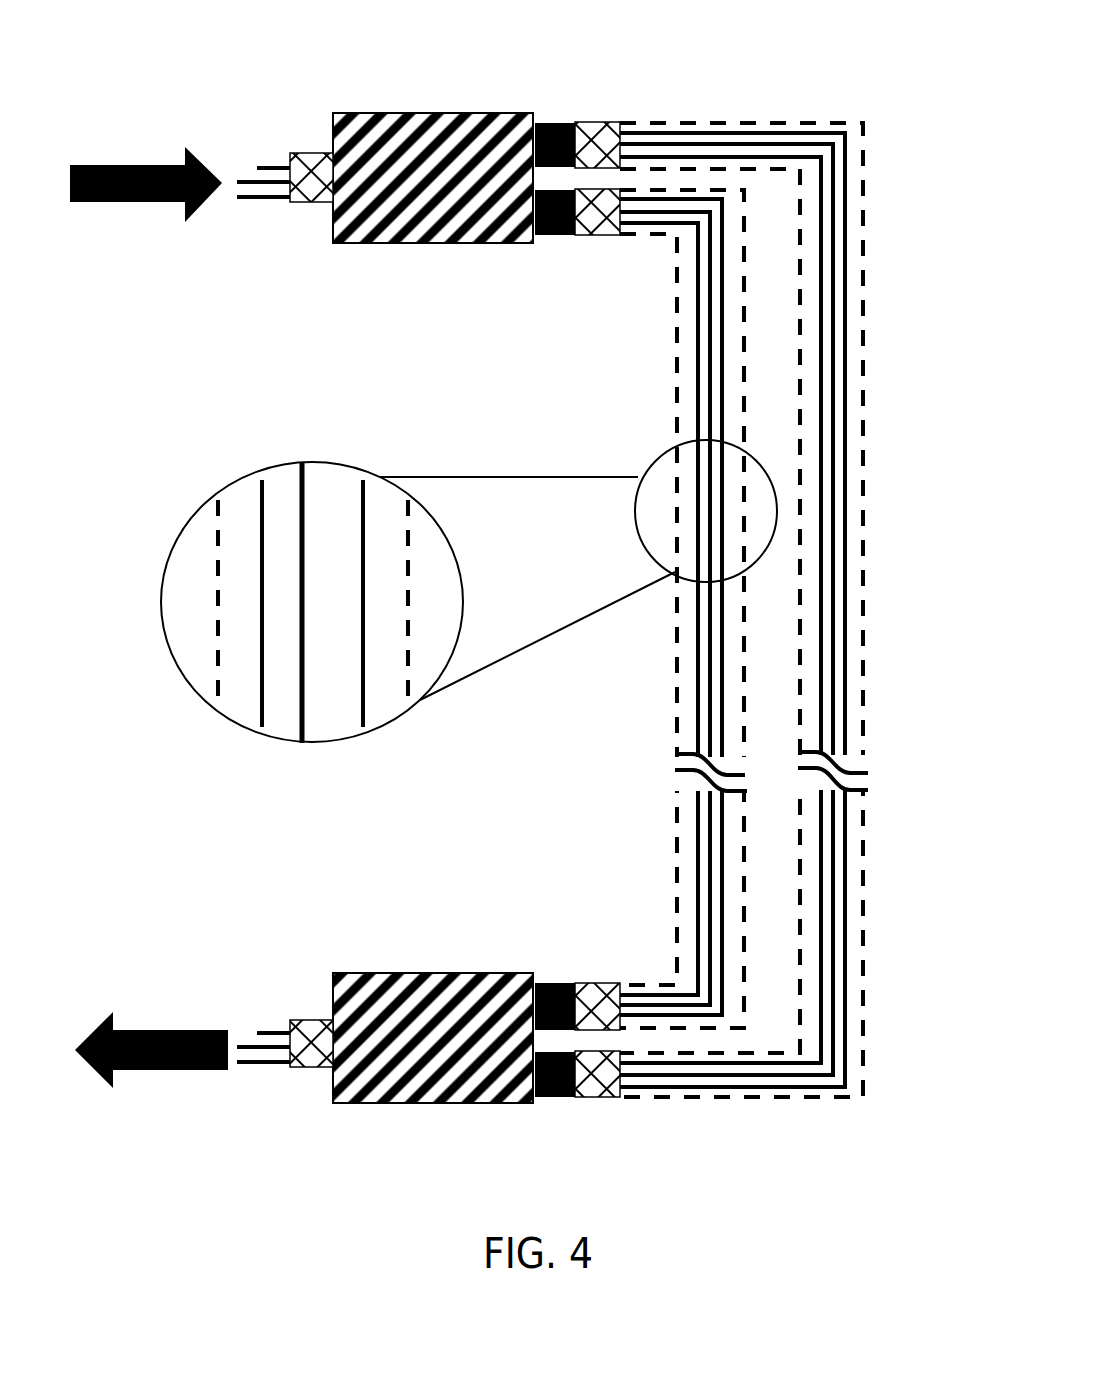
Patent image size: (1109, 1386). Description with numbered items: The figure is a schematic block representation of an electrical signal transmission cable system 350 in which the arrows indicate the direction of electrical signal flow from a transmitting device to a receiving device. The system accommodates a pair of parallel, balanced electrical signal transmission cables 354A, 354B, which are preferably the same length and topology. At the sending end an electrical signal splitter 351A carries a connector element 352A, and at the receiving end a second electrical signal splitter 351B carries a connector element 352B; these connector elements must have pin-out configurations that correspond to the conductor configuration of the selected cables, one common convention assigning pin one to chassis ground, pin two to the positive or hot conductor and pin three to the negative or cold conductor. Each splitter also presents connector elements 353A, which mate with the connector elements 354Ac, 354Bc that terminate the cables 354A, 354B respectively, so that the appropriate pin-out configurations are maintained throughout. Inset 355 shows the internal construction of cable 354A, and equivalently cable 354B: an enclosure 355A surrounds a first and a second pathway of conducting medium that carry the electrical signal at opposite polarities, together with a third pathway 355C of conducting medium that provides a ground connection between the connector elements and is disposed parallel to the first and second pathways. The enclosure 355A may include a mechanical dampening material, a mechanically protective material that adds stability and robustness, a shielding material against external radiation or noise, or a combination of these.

The cable assembly 350 is at (147, 35).
The electrical signal splitter 351A is at (402, 100).
The electrical signal splitter 351B is at (423, 957).
The connector element 352A is at (312, 205).
The connector element 352B is at (313, 1018).
The connector element 353A is at (549, 121).
The connector element 354Ac is at (610, 240).
The connector element 354Bc is at (601, 121).
The balanced electrical signal transmission cable 354A is at (662, 632).
The balanced electrical signal transmission cable 354B is at (987, 510).
The inset 355 is at (172, 515).
The enclosure 355A is at (215, 645).
The third pathway 355C is at (363, 703).